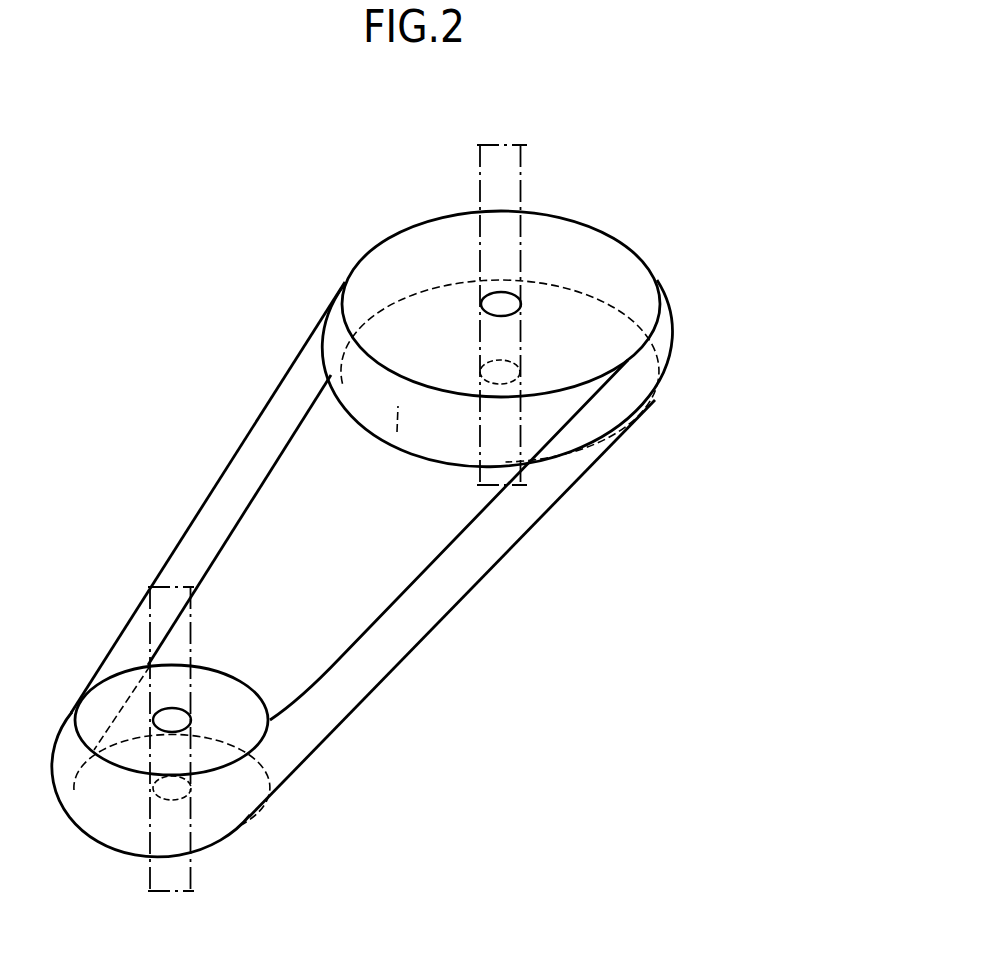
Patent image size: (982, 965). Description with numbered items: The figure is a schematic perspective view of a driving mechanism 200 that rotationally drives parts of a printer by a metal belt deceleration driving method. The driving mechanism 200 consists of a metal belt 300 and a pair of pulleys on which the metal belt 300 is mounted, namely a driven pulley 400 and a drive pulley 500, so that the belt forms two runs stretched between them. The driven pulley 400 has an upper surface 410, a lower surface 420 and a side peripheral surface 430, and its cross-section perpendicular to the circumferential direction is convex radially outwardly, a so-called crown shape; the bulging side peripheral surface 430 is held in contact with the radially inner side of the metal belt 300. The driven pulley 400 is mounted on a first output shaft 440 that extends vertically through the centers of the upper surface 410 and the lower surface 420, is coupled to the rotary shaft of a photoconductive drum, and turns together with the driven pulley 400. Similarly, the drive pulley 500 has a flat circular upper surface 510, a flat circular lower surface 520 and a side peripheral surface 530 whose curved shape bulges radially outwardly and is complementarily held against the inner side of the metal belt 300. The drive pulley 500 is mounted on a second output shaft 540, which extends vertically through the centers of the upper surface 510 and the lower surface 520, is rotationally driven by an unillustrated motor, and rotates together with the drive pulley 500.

The driving mechanism 200 is at (682, 140).
The metal belt 300 is at (477, 565).
The driven pulley 400 is at (405, 230).
The upper surface 410 is at (590, 247).
The lower surface 420 is at (396, 438).
The side peripheral surface 430 is at (337, 390).
The first output shaft 440 is at (510, 160).
The drive pulley 500 is at (91, 826).
The upper surface 510 is at (227, 697).
The lower surface 520 is at (241, 820).
The side peripheral surface 530 is at (268, 720).
The second output shaft 540 is at (193, 878).